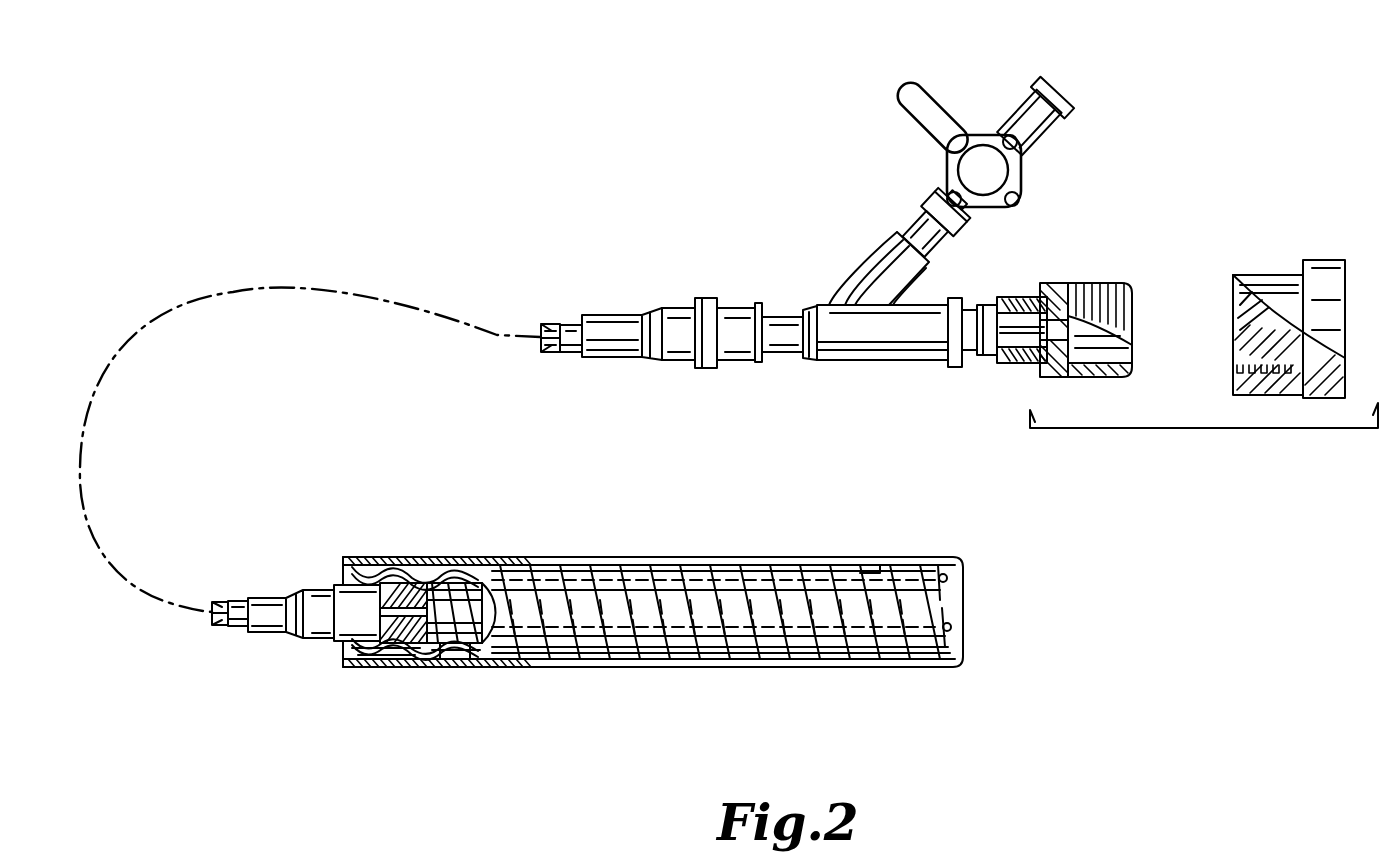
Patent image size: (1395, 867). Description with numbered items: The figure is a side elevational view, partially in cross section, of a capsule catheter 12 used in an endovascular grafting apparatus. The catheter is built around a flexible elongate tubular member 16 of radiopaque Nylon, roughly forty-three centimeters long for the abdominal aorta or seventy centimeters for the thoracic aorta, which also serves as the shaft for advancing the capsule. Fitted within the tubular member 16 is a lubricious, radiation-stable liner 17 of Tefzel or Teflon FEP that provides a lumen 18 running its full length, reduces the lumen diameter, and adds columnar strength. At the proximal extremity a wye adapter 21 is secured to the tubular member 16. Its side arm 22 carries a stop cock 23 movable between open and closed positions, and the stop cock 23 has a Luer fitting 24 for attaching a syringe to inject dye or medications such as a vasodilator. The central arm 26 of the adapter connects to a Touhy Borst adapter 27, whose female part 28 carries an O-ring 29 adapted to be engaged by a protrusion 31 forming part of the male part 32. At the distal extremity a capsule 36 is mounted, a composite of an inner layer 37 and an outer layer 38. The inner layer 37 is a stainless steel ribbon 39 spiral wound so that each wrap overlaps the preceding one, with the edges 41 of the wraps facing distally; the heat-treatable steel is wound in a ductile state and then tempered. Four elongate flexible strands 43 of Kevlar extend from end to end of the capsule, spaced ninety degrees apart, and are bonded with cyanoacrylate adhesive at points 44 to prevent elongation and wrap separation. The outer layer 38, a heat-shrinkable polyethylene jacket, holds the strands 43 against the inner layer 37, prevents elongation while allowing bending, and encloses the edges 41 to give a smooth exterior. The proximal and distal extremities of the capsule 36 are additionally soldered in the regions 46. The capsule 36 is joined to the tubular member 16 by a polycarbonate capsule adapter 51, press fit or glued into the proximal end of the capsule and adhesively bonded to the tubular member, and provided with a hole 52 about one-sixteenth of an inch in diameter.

The capsule catheter 12 is at (620, 307).
The flexible elongate tubular member 16 is at (615, 357).
The liner 17 is at (562, 356).
The lumen 18 is at (545, 338).
The wye adapter 21 is at (815, 365).
The side arm 22 is at (852, 280).
The stop cock 23 is at (922, 90).
The Luer fitting 24 is at (1038, 75).
The central arm 26 is at (880, 366).
The Touhy Borst adapter 27 is at (1158, 427).
The female part 28 is at (1045, 284).
The O-ring 29 is at (1046, 373).
The protrusion 31 is at (1233, 312).
The male part 32 is at (1283, 272).
The capsule 36 is at (506, 562).
The inner layer 37 is at (437, 570).
The outer layer 38 is at (468, 570).
The stainless steel ribbon 39 is at (447, 665).
The edges 41 is at (412, 662).
The elongate flexible strands 43 is at (530, 572).
The points 44 is at (940, 555).
The regions 46 is at (378, 568).
The capsule adapter 51 is at (345, 592).
The hole 52 is at (412, 572).